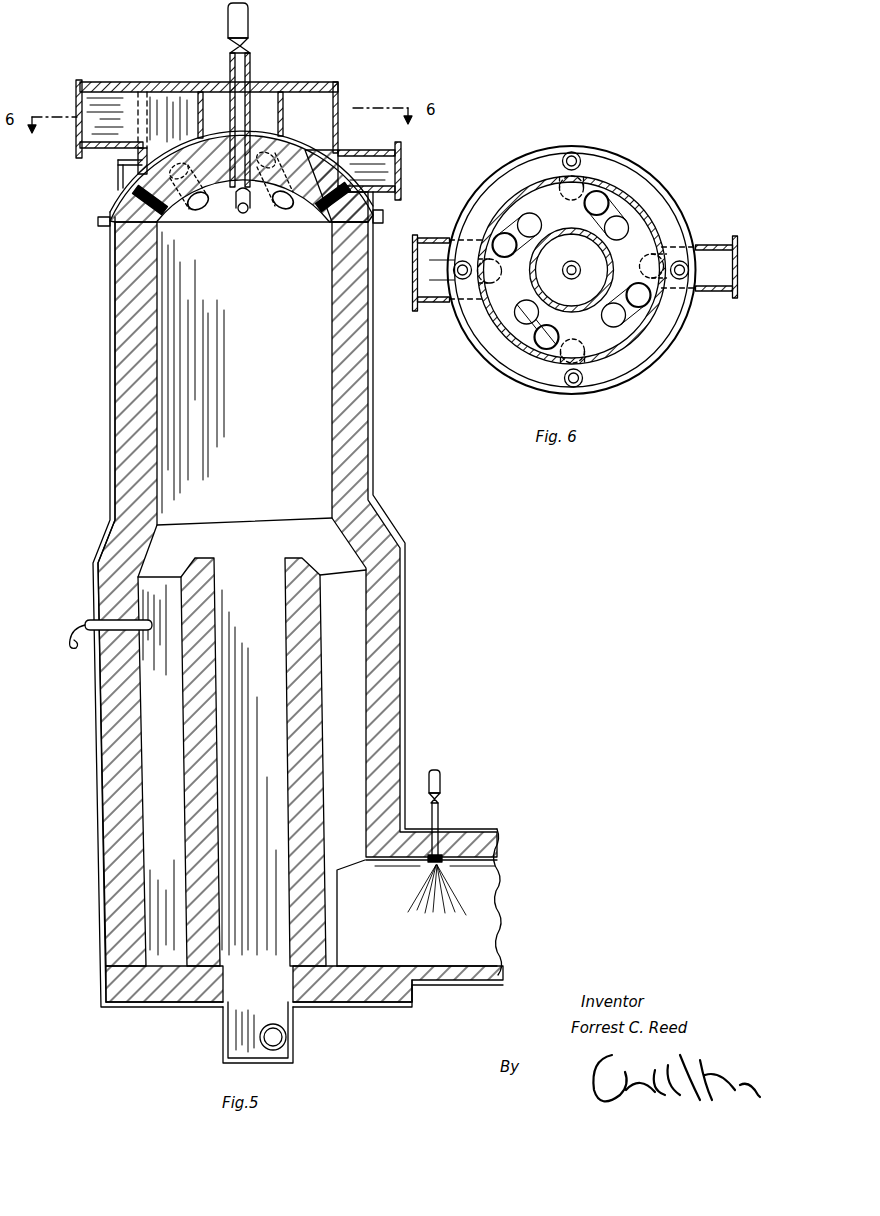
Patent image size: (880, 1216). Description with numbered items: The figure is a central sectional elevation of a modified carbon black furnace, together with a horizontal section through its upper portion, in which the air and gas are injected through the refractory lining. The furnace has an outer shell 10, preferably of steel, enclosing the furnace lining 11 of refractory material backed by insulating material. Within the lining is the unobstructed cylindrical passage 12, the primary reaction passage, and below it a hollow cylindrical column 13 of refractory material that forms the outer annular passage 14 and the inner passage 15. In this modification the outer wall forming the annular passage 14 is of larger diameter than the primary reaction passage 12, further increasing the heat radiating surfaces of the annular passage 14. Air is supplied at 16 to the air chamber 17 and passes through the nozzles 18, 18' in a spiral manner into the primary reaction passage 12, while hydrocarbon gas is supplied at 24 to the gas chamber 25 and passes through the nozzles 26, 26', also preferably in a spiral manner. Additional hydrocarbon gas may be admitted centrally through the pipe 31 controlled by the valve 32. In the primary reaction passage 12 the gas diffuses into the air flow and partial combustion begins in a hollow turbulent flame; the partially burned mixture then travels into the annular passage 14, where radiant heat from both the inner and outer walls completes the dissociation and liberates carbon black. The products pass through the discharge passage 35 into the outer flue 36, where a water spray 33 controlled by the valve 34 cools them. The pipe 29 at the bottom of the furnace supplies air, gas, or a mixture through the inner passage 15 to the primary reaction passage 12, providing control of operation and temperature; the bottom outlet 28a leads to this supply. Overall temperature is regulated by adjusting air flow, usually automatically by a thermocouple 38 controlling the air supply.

In FIG. 5, the outer shell 10 is at (95, 580).
In FIG. 5, the furnace lining 11 is at (127, 547).
In FIG. 5, the unobstructed cylindrical passage 12 is at (313, 412).
In FIG. 5, the hollow cylindrical column 13 is at (207, 702).
In FIG. 5, the outer annular passage 14 is at (347, 637).
In FIG. 5, the inner passage 15 is at (267, 680).
In FIG. 5, the air supply 16 is at (90, 106).
In FIG. 6, the air supply 16 is at (433, 272).
In FIG. 5, the air chamber 17 is at (313, 127).
In FIG. 6, the air chamber 17 is at (642, 252).
In FIG. 5, the nozzle 18 is at (201, 189).
In FIG. 6, the nozzle 18 is at (486, 278).
In FIG. 5, the nozzle 18' is at (275, 184).
In FIG. 6, the nozzle 18' is at (646, 239).
In FIG. 5, the gas supply 24 is at (387, 168).
In FIG. 6, the gas supply 24 is at (738, 267).
In FIG. 5, the gas chamber 25 is at (345, 163).
In FIG. 5, the nozzle 26 is at (191, 223).
In FIG. 6, the nozzle 26 is at (540, 254).
In FIG. 5, the nozzle 26' is at (318, 221).
In FIG. 6, the nozzle 26' is at (684, 244).
In FIG. 5, the outlet 28a is at (302, 1023).
In FIG. 5, the pipe 29 is at (260, 1038).
In FIG. 5, the pipe 31 is at (247, 100).
In FIG. 6, the pipe 31 is at (563, 273).
In FIG. 5, the valve 32 is at (247, 45).
In FIG. 5, the water spray 33 is at (483, 868).
In FIG. 5, the valve 34 is at (442, 798).
In FIG. 5, the discharge passage 35 is at (365, 863).
In FIG. 5, the outer flue 36 is at (445, 940).
In FIG. 5, the thermocouple 38 is at (66, 650).